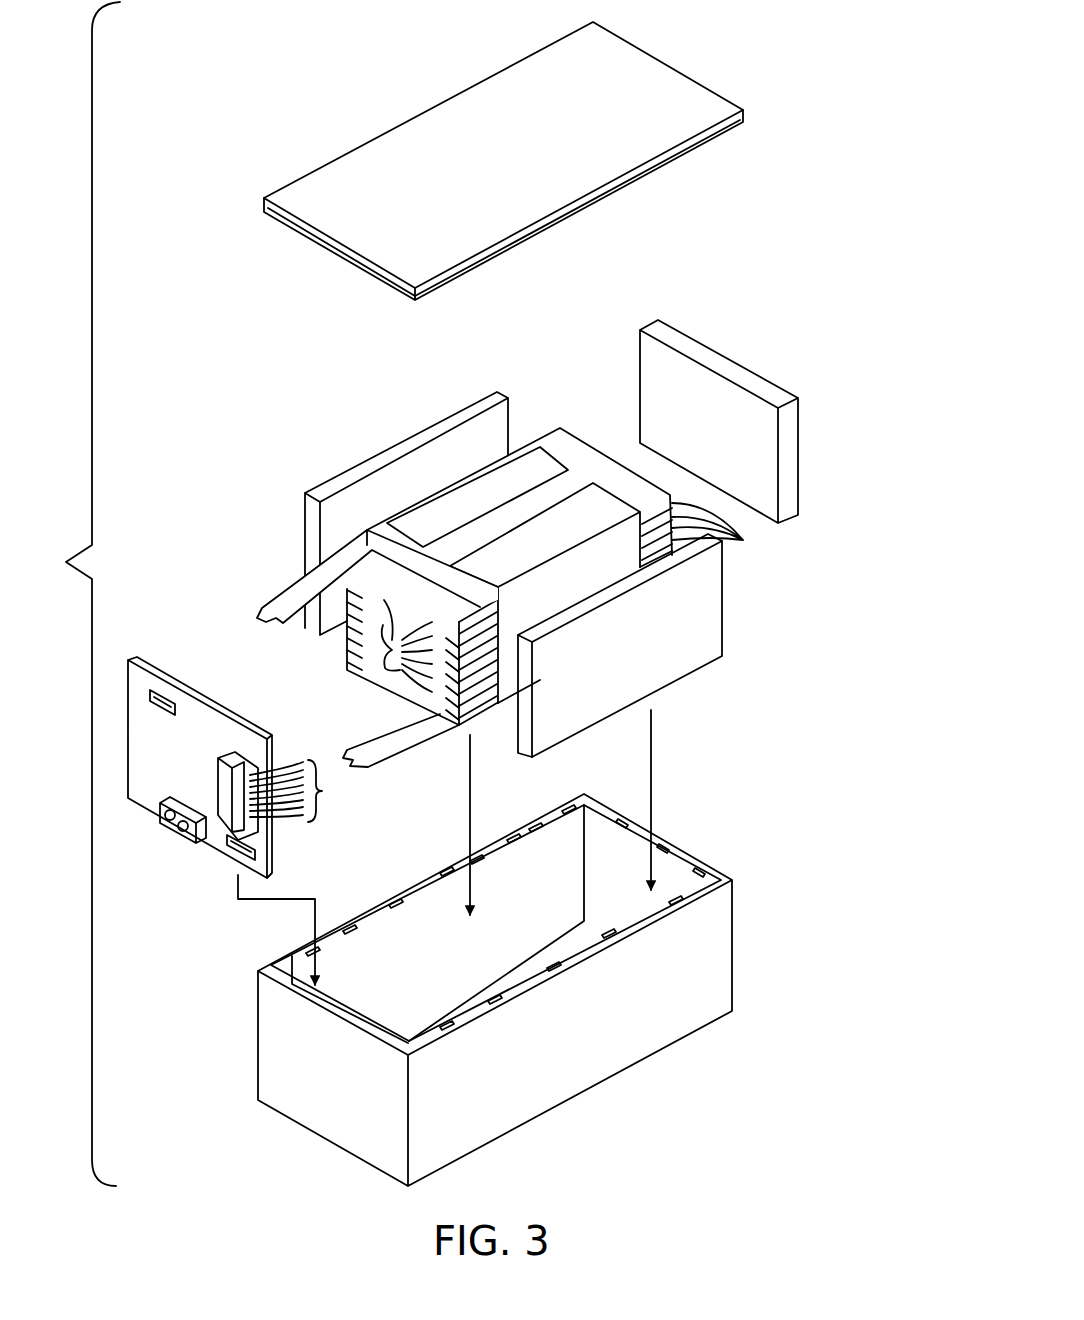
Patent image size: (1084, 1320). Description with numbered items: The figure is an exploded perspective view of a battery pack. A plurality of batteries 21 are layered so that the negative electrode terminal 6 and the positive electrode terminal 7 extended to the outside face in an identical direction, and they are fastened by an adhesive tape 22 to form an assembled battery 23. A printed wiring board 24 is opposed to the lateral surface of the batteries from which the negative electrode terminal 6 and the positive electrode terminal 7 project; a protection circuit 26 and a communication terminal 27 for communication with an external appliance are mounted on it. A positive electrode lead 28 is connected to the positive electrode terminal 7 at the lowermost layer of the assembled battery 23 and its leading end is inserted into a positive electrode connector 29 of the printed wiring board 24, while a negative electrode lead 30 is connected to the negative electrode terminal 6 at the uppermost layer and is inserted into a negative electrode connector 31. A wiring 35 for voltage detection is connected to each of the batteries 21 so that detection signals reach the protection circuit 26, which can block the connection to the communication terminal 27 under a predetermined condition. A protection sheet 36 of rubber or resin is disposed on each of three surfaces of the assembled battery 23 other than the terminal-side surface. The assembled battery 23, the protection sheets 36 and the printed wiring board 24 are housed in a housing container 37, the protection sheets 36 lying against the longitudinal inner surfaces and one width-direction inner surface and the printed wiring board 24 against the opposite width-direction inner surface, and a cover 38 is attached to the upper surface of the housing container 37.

The negative electrode terminal 6 is at (500, 599).
The positive electrode terminal 7 is at (432, 598).
The battery 21 is at (743, 540).
The adhesive tape 22 is at (583, 513).
The assembled battery 23 is at (451, 482).
The printed wiring board 24 is at (226, 787).
The protection circuit 26 is at (233, 753).
The communication terminal 27 is at (185, 833).
The positive electrode lead 28 is at (390, 750).
The positive electrode connector 29 is at (255, 853).
The negative electrode lead 30 is at (273, 602).
The negative electrode connector 31 is at (168, 698).
The wiring for voltage detection 35 is at (380, 660).
The protection sheet 36 is at (372, 467).
The housing container 37 is at (721, 954).
The cover 38 is at (687, 95).